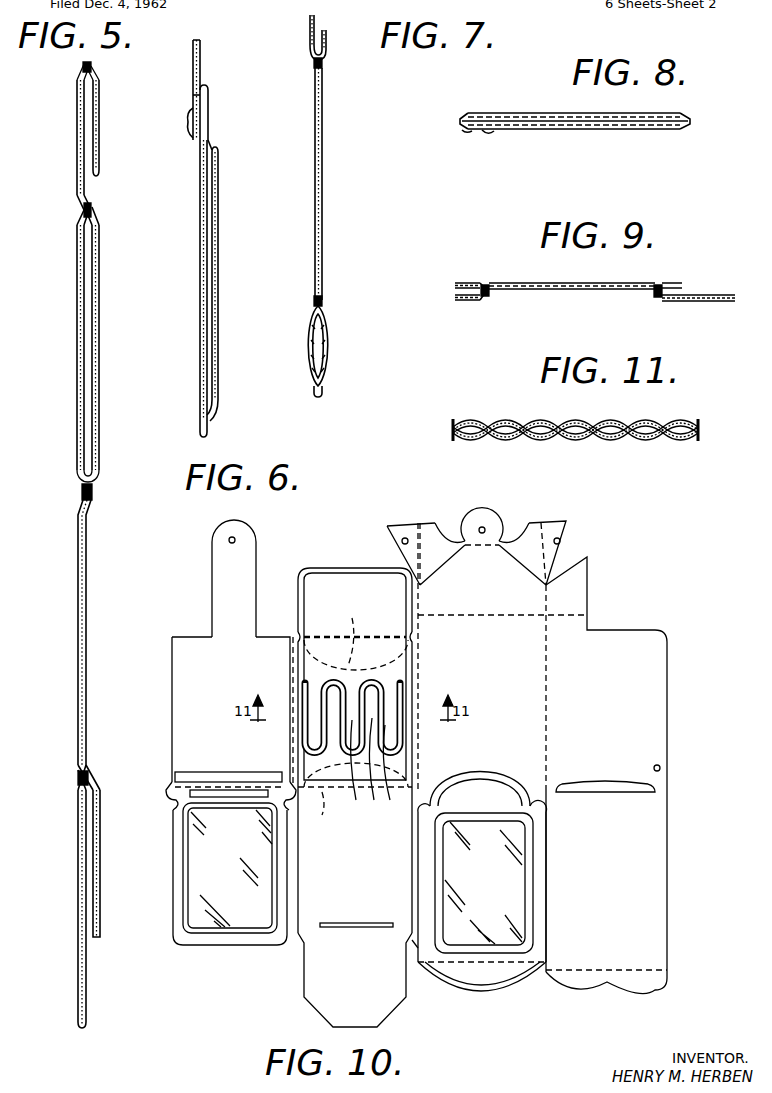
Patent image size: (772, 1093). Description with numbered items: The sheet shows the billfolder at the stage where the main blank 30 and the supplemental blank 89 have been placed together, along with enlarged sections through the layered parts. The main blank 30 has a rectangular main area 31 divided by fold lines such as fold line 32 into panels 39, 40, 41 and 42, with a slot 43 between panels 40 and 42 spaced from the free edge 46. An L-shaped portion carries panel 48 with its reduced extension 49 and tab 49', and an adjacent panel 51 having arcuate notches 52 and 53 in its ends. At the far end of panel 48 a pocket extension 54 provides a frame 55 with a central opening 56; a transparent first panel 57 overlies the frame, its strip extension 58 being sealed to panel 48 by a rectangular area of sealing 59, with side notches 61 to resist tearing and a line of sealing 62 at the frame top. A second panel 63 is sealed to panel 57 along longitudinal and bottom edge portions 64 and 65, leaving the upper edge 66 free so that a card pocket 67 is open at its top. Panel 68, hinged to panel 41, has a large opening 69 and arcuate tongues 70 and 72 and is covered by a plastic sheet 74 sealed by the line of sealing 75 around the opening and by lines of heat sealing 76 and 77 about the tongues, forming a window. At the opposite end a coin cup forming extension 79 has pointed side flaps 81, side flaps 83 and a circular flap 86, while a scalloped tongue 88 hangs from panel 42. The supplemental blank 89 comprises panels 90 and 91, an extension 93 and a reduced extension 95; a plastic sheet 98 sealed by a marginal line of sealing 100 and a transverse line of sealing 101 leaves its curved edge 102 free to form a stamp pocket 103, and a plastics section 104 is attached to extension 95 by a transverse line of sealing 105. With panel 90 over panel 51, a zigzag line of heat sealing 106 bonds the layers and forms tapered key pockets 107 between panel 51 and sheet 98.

In FIG. 10, the main blank 30 is at (653, 642).
In FIG. 10, the main area 31 is at (666, 718).
In FIG. 10, the fold line 32 is at (498, 616).
In FIG. 10, the panel 39 is at (489, 702).
In FIG. 10, the panel 40 is at (608, 711).
In FIG. 9, the panel 41 is at (700, 301).
In FIG. 10, the panel 42 is at (616, 893).
In FIG. 10, the slot 43 is at (606, 786).
In FIG. 10, the free edge 46 is at (668, 868).
In FIG. 6, the panel 48 is at (200, 52).
In FIG. 10, the panel 48 is at (240, 698).
In FIG. 10, the reduced rectangular extension 49 is at (213, 578).
In FIG. 10, the tab 49' is at (198, 548).
In FIG. 11, the panel 51 is at (572, 440).
In FIG. 10, the arcuate notch 52 is at (356, 638).
In FIG. 10, the arcuate notch 53 is at (356, 798).
In FIG. 6, the pocket extension 54 is at (216, 320).
In FIG. 6, the frame 55 is at (200, 425).
In FIG. 8, the frame 55 is at (468, 130).
In FIG. 6, the central opening 56 is at (202, 410).
In FIG. 8, the central opening 56 is at (492, 130).
In FIG. 6, the first panel 57 is at (200, 281).
In FIG. 8, the first panel 57 is at (580, 129).
In FIG. 6, the top transverse strip extension 58 is at (208, 108).
In FIG. 6, the rectangular area of sealing 59 is at (198, 97).
In FIG. 10, the rectangular area of sealing 59 is at (206, 777).
In FIG. 10, the side notches 61 is at (172, 792).
In FIG. 6, the line of sealing 62 is at (194, 125).
In FIG. 10, the line of sealing 62 is at (224, 800).
In FIG. 6, the second pocket forming panel 63 is at (218, 245).
In FIG. 8, the second pocket forming panel 63 is at (602, 114).
In FIG. 10, the second pocket forming panel 63 is at (232, 889).
In FIG. 8, the longitudinal edge portions 64 is at (465, 115).
In FIG. 6, the bottom edge portion 65 is at (208, 428).
In FIG. 6, the upper edge 66 is at (219, 153).
In FIG. 6, the pocket 67 is at (211, 142).
In FIG. 8, the pocket 67 is at (525, 114).
In FIG. 10, the pocket 67 is at (167, 903).
In FIG. 9, the window and pocket forming panel 68 is at (456, 300).
In FIG. 10, the window and pocket forming panel 68 is at (428, 968).
In FIG. 7, the opening 69 is at (316, 300).
In FIG. 7, the arcuate tongue 70 is at (310, 38).
In FIG. 10, the arcuate tongue 70 is at (490, 790).
In FIG. 7, the arcuate tongue 72 is at (309, 376).
In FIG. 10, the arcuate tongue 72 is at (492, 988).
In FIG. 7, the plastic sheet 74 is at (330, 246).
In FIG. 9, the plastic sheet 74 is at (592, 283).
In FIG. 10, the plastic sheet 74 is at (503, 895).
In FIG. 7, the line of sealing 75 is at (323, 66).
In FIG. 9, the line of sealing 75 is at (484, 286).
In FIG. 10, the line of sealing 75 is at (535, 862).
In FIG. 10, the line of heat sealing 76 is at (455, 776).
In FIG. 7, the line of heat sealing 77 is at (323, 393).
In FIG. 10, the line of heat sealing 77 is at (465, 995).
In FIG. 10, the coin cup forming extension 79 is at (495, 593).
In FIG. 10, the pointed side flaps 81 is at (395, 560).
In FIG. 10, the side flaps 83 is at (406, 522).
In FIG. 10, the circularly formed flap 86 is at (490, 517).
In FIG. 10, the scalloped tongue 88 is at (582, 985).
In FIG. 5, the supplemental blank 89 is at (71, 453).
In FIG. 10, the supplemental blank 89 is at (314, 911).
In FIG. 5, the panel 90 is at (77, 345).
In FIG. 11, the panel 90 is at (620, 420).
In FIG. 10, the panel 90 is at (400, 681).
In FIG. 5, the panel 91 is at (86, 588).
In FIG. 10, the panel 91 is at (357, 856).
In FIG. 5, the rectangular extension 93 is at (77, 130).
In FIG. 10, the rectangular extension 93 is at (350, 601).
In FIG. 5, the reduced extension 95 is at (78, 900).
In FIG. 10, the reduced extension 95 is at (366, 968).
In FIG. 5, the plastic sheet 98 is at (99, 130).
In FIG. 11, the plastic sheet 98 is at (538, 420).
In FIG. 5, the marginal line of sealing 100 is at (80, 66).
In FIG. 11, the marginal line of sealing 100 is at (456, 422).
In FIG. 10, the marginal line of sealing 100 is at (414, 672).
In FIG. 5, the transverse line of sealing 101 is at (92, 210).
In FIG. 5, the curved edge 102 is at (99, 174).
In FIG. 5, the pocket 103 is at (100, 95).
In FIG. 10, the pocket 103 is at (326, 565).
In FIG. 5, the plastics section 104 is at (100, 874).
In FIG. 5, the transverse line of sealing 105 is at (78, 778).
In FIG. 10, the transverse line of sealing 105 is at (368, 923).
In FIG. 11, the zigzag line of heat sealing 106 is at (480, 420).
In FIG. 10, the zigzag line of heat sealing 106 is at (322, 740).
In FIG. 11, the key pockets 107 is at (620, 440).
In FIG. 10, the key pockets 107 is at (376, 768).